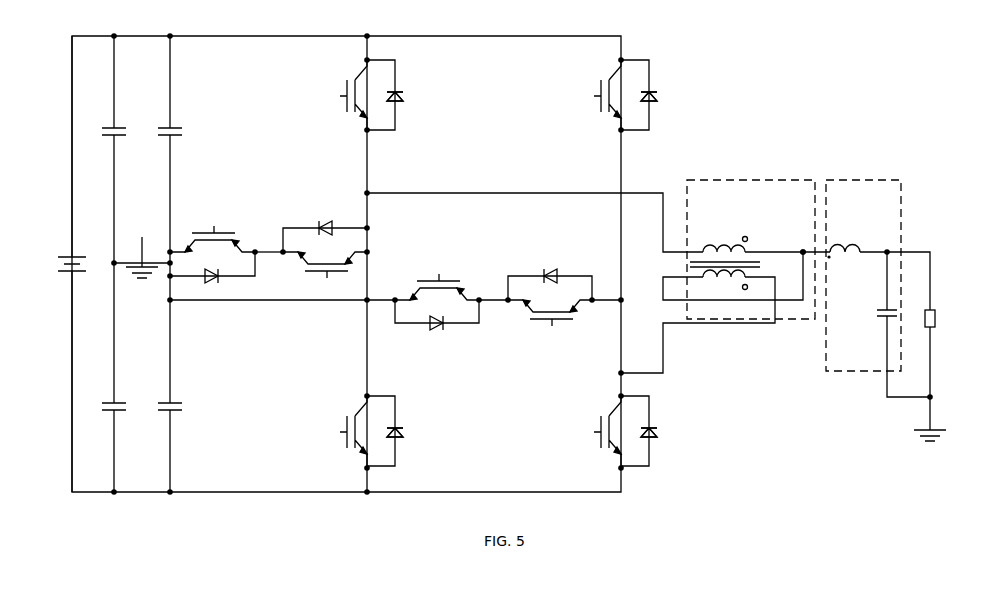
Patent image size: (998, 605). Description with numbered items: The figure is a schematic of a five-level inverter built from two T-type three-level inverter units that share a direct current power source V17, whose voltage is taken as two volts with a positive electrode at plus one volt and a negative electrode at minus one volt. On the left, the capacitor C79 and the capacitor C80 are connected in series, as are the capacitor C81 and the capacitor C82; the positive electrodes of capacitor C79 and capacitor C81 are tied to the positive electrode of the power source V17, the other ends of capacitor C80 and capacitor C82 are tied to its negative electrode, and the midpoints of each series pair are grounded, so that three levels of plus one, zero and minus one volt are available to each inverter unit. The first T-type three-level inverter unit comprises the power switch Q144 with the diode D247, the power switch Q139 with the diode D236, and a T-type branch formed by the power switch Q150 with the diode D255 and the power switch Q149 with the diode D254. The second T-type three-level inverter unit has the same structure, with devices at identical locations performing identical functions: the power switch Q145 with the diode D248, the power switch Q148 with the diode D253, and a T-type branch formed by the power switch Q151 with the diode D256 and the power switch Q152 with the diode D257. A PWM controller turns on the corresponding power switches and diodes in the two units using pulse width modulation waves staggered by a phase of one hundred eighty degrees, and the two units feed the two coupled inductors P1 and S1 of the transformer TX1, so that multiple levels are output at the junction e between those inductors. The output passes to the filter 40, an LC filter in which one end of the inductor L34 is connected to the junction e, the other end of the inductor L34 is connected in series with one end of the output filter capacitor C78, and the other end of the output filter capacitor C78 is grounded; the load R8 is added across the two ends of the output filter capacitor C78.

The power source V17 is at (83, 264).
The capacitor C79 is at (127, 149).
The capacitor C81 is at (183, 168).
The capacitor C80 is at (128, 377).
The capacitor C82 is at (183, 396).
The power switch Q144 is at (371, 95).
The diode D247 is at (416, 94).
The power switch Q145 is at (630, 95).
The diode D248 is at (670, 94).
The power switch Q139 is at (371, 431).
The diode D236 is at (416, 429).
The power switch Q148 is at (629, 431).
The diode D253 is at (668, 428).
The power switch Q150 is at (212, 245).
The diode D255 is at (212, 277).
The power switch Q149 is at (311, 258).
The diode D254 is at (325, 226).
The power switch Q151 is at (437, 294).
The diode D256 is at (437, 324).
The power switch Q152 is at (550, 306).
The diode D257 is at (550, 273).
The transformer TX1 is at (798, 180).
The coupled inductor P1 is at (725, 242).
The coupled inductor S1 is at (725, 285).
The junction e is at (804, 244).
The filter 40 is at (896, 180).
The inductor L34 is at (847, 260).
The output filter capacitor C78 is at (904, 324).
The load R8 is at (942, 319).